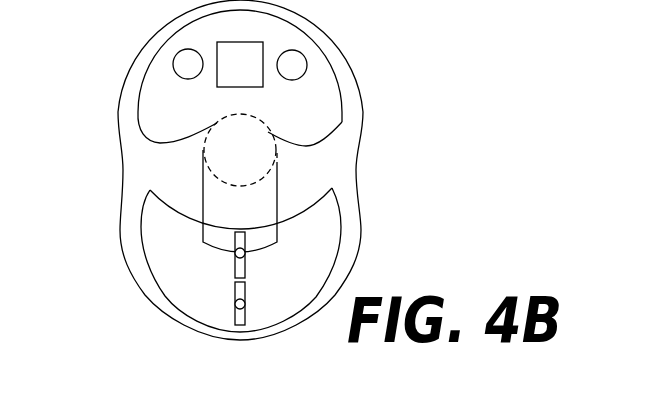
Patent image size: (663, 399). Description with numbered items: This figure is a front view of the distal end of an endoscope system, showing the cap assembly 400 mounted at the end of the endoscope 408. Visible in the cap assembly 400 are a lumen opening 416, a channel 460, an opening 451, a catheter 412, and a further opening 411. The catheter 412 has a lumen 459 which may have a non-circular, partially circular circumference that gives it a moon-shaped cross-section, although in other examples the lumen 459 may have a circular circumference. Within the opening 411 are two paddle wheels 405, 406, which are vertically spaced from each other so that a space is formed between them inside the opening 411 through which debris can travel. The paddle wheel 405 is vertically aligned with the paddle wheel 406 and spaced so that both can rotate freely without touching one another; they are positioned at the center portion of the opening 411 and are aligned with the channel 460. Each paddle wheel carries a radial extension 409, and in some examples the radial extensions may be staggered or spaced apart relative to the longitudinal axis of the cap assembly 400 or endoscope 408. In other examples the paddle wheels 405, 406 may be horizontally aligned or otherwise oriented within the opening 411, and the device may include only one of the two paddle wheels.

The cap assembly 400 is at (368, 38).
The paddle wheel 405 is at (204, 239).
The paddle wheel 406 is at (236, 303).
The endoscope 408 is at (25, 5).
The radial extension 409 is at (66, 0).
The opening 411 is at (200, 274).
The catheter 412 is at (358, 259).
The lumen opening 416 is at (268, 132).
The opening 451 is at (160, 80).
The lumen 459 is at (326, 228).
The channel 460 is at (240, 216).